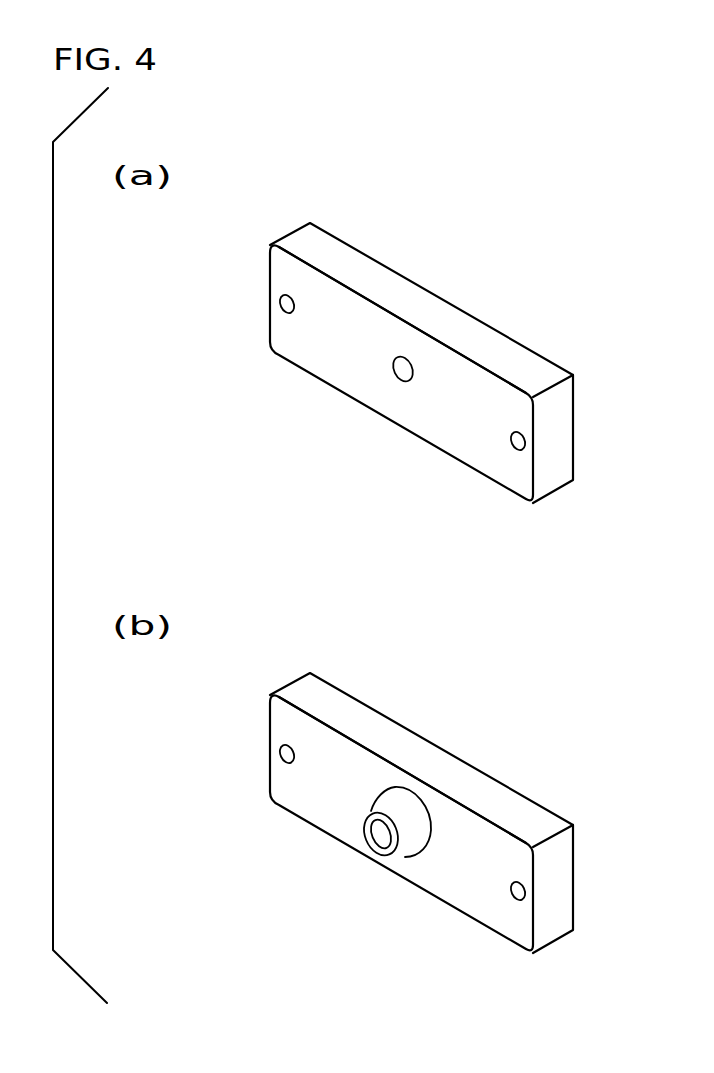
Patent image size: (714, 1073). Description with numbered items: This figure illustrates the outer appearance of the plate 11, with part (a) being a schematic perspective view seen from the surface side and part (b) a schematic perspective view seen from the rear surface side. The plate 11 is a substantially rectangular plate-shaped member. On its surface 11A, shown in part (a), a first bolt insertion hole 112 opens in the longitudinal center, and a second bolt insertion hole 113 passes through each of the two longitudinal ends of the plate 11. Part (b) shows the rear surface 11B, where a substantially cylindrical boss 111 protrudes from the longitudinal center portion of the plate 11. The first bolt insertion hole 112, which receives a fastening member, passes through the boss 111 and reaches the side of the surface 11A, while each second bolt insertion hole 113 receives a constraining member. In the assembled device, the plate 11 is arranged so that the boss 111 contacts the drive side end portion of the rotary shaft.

The plate 11 is at (514, 254).
The surface 11A is at (503, 393).
The rear surface 11B is at (503, 843).
The boss 111 is at (403, 858).
The first bolt insertion hole 112 is at (397, 380).
The second bolt insertion hole 113 is at (281, 308).